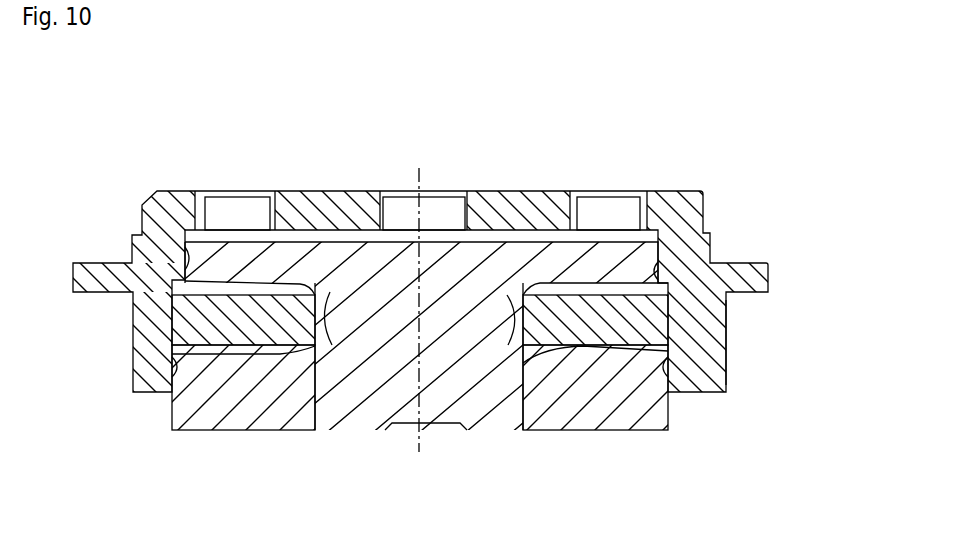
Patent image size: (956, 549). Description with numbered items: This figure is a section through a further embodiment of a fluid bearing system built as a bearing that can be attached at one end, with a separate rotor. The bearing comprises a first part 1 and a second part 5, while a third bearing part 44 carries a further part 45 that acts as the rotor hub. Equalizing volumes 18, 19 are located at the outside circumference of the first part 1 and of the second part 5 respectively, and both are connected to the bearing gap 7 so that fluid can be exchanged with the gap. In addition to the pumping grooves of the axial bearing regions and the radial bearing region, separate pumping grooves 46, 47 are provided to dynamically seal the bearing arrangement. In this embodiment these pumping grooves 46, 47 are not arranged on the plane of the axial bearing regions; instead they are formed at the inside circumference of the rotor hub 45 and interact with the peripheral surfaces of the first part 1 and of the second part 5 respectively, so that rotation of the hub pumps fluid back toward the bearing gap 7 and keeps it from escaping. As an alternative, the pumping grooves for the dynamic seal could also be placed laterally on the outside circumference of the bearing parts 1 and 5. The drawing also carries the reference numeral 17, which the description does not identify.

The first part 1 is at (500, 263).
The second part 5 is at (241, 413).
The bearing gap 7 is at (627, 347).
The central axis 17 is at (421, 172).
The equalizing volume 18 is at (666, 282).
The equalizing volume 19 is at (700, 381).
The third bearing part 44 is at (620, 322).
The rotor hub 45 is at (680, 213).
The pumping grooves 46 is at (655, 270).
The pumping grooves 47 is at (471, 236).